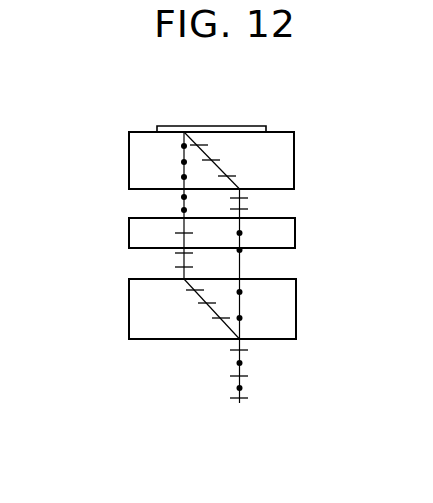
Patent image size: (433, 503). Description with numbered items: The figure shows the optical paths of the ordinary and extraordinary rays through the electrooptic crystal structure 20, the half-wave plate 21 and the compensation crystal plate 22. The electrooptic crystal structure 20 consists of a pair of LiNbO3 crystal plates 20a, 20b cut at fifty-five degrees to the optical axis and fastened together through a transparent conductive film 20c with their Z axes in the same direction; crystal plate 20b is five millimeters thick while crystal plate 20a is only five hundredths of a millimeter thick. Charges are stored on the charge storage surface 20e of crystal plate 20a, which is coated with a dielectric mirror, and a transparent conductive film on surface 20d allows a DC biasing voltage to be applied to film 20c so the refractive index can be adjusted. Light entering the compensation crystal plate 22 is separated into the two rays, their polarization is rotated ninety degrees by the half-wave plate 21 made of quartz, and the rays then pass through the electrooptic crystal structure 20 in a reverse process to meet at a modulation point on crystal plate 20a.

The electrooptic crystal structure 20 is at (211, 147).
The crystal plate 20a is at (157, 126).
The crystal plate 20b is at (129, 166).
The transparent conductive film 20c is at (129, 133).
The surface 20d is at (129, 190).
The charge storage surface 20e is at (258, 126).
The half-wave plate 21 is at (295, 233).
The compensation crystal plate 22 is at (296, 310).